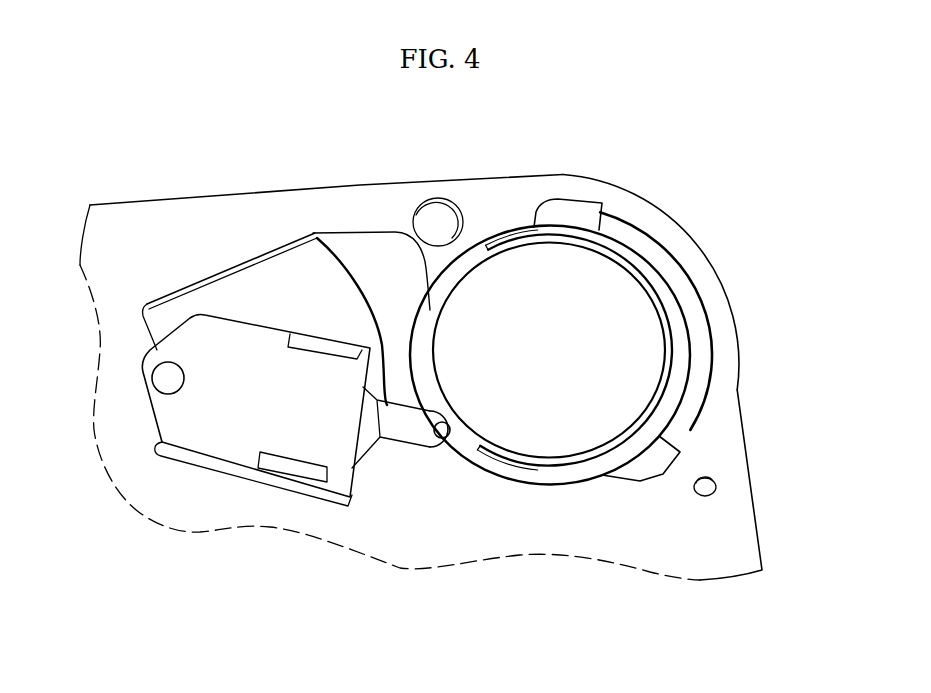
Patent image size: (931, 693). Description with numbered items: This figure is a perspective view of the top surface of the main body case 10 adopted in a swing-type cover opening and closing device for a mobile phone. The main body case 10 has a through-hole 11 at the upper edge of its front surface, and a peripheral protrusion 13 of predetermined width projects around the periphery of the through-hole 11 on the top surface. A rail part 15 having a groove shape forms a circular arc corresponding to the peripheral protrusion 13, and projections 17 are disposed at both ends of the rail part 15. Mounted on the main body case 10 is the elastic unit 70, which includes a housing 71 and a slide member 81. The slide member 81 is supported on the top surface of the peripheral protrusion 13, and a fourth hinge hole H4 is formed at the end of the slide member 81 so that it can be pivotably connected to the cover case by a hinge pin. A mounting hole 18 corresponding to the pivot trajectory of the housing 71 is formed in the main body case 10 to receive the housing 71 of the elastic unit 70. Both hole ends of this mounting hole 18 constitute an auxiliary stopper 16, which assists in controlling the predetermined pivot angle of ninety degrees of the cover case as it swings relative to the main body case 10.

The main body case 10 is at (740, 360).
The through-hole 11 is at (562, 400).
The peripheral protrusion 13 is at (470, 447).
The rail part 15 is at (667, 263).
The auxiliary stopper 16 is at (197, 282).
The projections 17 is at (573, 208).
The mounting hole 18 is at (244, 294).
The elastic unit 70 is at (286, 359).
The housing 71 is at (227, 425).
The slide member 81 is at (440, 448).
The fourth hinge hole H4 is at (425, 450).